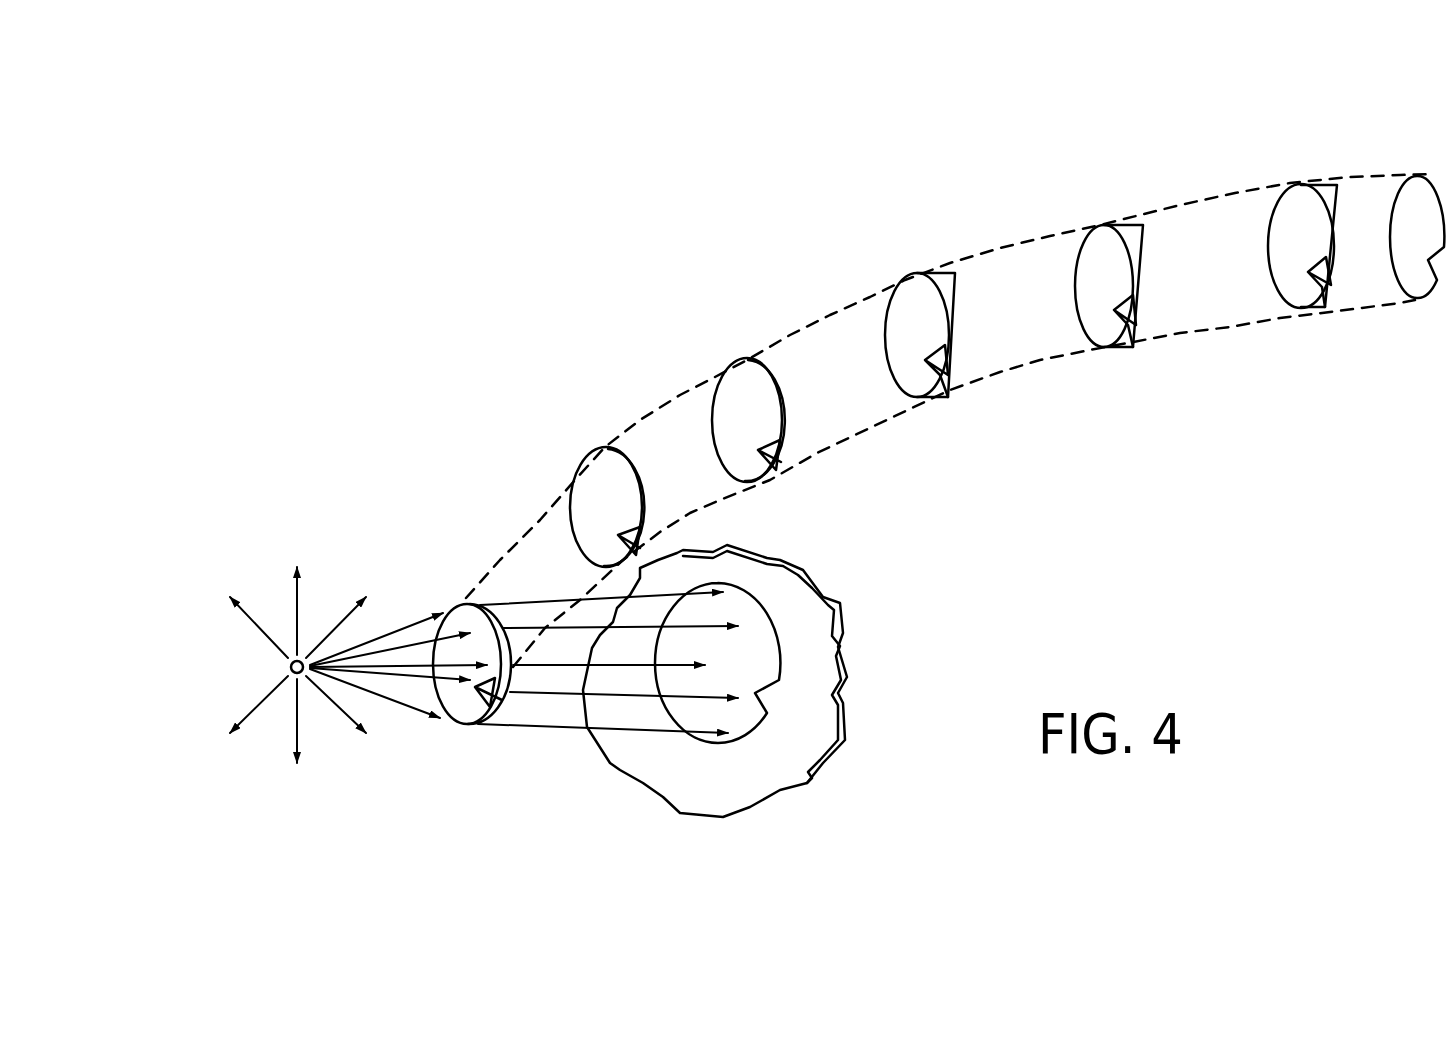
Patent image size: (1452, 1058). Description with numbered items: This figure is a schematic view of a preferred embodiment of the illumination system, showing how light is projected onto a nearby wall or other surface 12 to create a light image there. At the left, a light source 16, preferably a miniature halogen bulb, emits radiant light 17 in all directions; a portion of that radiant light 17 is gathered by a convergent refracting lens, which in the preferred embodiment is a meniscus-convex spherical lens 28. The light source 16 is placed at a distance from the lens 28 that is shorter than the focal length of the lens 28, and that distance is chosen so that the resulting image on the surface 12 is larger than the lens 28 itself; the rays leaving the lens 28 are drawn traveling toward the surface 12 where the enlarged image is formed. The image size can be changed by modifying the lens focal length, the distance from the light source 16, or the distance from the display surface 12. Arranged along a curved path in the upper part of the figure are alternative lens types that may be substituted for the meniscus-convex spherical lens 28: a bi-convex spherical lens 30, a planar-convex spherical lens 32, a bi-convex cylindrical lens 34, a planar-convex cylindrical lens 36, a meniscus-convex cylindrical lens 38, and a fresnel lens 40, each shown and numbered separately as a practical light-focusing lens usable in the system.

The wall or other surface 12 is at (763, 645).
The light source 16 is at (268, 667).
The radiant light 17 is at (393, 623).
The meniscus-convex spherical lens 28 is at (478, 606).
The bi-convex spherical lens 30 is at (615, 450).
The planar-convex spherical lens 32 is at (760, 365).
The bi-convex cylindrical lens 34 is at (930, 292).
The planar-convex cylindrical lens 36 is at (1118, 242).
The meniscus-convex cylindrical lens 38 is at (1305, 202).
The fresnel lens 40 is at (1428, 202).